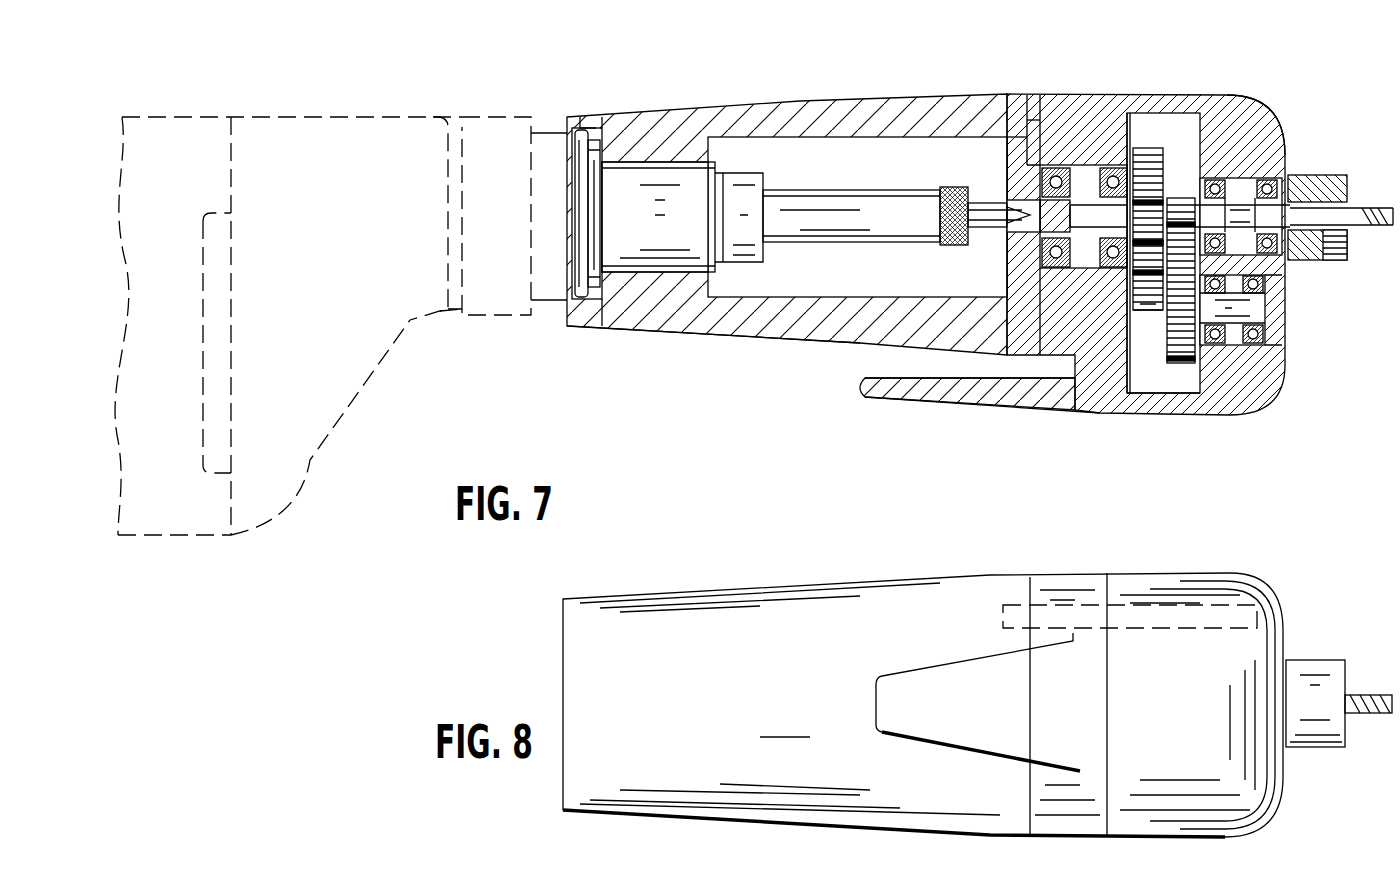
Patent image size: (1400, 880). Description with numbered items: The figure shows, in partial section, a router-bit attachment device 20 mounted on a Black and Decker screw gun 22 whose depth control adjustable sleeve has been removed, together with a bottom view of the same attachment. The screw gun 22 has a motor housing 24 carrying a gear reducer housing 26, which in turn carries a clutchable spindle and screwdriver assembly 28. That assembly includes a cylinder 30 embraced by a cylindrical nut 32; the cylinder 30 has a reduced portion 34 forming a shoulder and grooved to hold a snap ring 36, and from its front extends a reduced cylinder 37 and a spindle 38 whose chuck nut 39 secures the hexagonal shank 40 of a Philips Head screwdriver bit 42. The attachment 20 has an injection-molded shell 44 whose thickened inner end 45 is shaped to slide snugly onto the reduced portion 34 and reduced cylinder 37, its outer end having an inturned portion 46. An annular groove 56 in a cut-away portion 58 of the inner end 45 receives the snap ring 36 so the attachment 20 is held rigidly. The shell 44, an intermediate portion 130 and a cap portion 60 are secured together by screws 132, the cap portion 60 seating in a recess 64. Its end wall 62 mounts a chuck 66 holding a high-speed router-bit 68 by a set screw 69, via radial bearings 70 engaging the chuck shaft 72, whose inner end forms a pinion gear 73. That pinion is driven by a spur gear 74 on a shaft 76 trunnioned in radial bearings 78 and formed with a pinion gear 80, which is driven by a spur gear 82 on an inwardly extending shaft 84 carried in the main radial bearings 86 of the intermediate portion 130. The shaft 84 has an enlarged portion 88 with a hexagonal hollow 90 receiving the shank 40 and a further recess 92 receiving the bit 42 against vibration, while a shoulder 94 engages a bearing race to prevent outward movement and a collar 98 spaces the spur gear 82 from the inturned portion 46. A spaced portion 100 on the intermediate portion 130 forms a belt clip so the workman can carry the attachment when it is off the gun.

In FIG. 7, the router-bit attachment device 20 is at (755, 365).
In FIG. 7, the screw gun 22 is at (212, 558).
In FIG. 7, the motor housing 24 is at (155, 538).
In FIG. 7, the gear reducer housing 26 is at (310, 462).
In FIG. 7, the clutchable spindle and screwdriver assembly 28 is at (535, 325).
In FIG. 7, the cylinder 30 is at (540, 140).
In FIG. 7, the cylindrical nut 32 is at (480, 130).
In FIG. 7, the reduced portion 34 is at (594, 290).
In FIG. 7, the snap ring 36 is at (581, 300).
In FIG. 7, the reduced cylinder 37 is at (657, 262).
In FIG. 7, the spindle 38 is at (881, 226).
In FIG. 7, the chuck nut 39 is at (950, 246).
In FIG. 7, the hexagonal shank 40 is at (985, 228).
In FIG. 7, the Philips Head screwdriver bit 42 is at (1015, 230).
In FIG. 7, the shell 44 is at (838, 102).
In FIG. 8, the shell 44 is at (730, 605).
In FIG. 7, the inner end 45 is at (652, 150).
In FIG. 7, the inturned portion 46 is at (1016, 160).
In FIG. 7, the annular groove 56 is at (581, 128).
In FIG. 7, the cut-away portion 58 is at (604, 140).
In FIG. 7, the cap portion 60 is at (1232, 112).
In FIG. 8, the cap portion 60 is at (1252, 582).
In FIG. 7, the end wall 62 is at (1278, 288).
In FIG. 7, the recess 64 is at (1120, 112).
In FIG. 7, the chuck 66 is at (1315, 176).
In FIG. 8, the chuck 66 is at (1315, 668).
In FIG. 7, the router-bit 68 is at (1378, 207).
In FIG. 8, the router-bit 68 is at (1378, 695).
In FIG. 7, the set screw 69 is at (1347, 245).
In FIG. 7, the radial bearings 70 is at (1250, 235).
In FIG. 7, the shaft 72 is at (1255, 255).
In FIG. 7, the pinion gear 73 is at (1180, 206).
In FIG. 7, the spur gear 74 is at (1180, 365).
In FIG. 7, the shaft 76 is at (1250, 312).
In FIG. 7, the radial bearings 78 is at (1253, 345).
In FIG. 7, the pinion gear 80 is at (1148, 311).
In FIG. 7, the spur gear 82 is at (1148, 148).
In FIG. 7, the shaft 84 is at (1098, 228).
In FIG. 7, the radial bearings 86 is at (1060, 165).
In FIG. 7, the enlarged portion 88 is at (1012, 200).
In FIG. 7, the hexagonal hollow 90 is at (1005, 197).
In FIG. 7, the recess 92 is at (1050, 233).
In FIG. 7, the shoulder 94 is at (1030, 162).
In FIG. 7, the collar 98 is at (1105, 370).
In FIG. 7, the spaced portion 100 is at (920, 398).
In FIG. 8, the spaced portion 100 is at (958, 714).
In FIG. 7, the intermediate portion 130 is at (1050, 120).
In FIG. 8, the intermediate portion 130 is at (1058, 592).
In FIG. 8, the screws 132 is at (1210, 612).